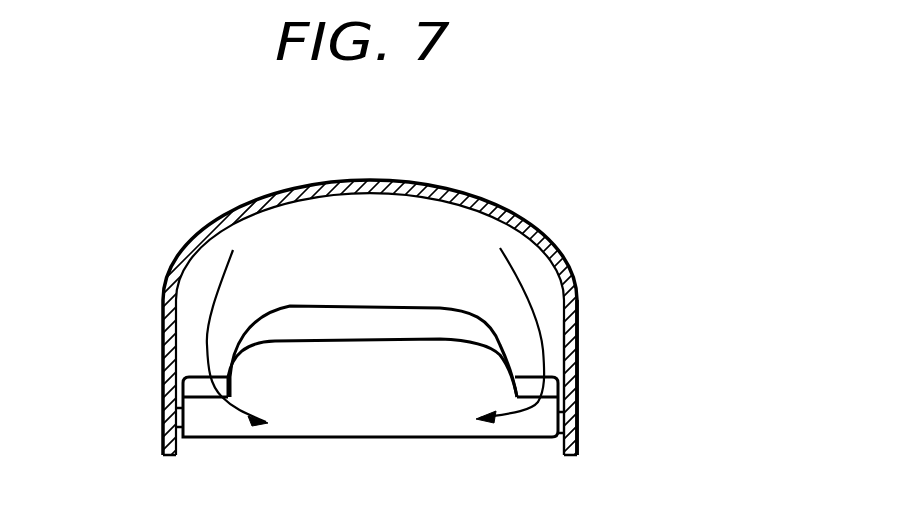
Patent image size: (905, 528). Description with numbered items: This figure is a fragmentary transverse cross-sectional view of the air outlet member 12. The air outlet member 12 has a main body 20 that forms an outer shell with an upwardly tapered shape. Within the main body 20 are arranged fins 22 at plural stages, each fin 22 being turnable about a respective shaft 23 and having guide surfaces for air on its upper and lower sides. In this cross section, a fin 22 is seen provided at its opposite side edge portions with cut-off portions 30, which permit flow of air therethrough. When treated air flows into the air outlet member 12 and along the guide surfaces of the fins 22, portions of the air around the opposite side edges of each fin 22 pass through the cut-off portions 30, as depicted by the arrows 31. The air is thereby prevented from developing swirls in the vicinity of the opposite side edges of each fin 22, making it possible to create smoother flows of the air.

The air outlet member 12 is at (209, 190).
The main body 20 is at (577, 298).
The cut-off portions 30 is at (572, 372).
The arrows 31 is at (516, 285).
The fins 22 is at (393, 413).
The shafts 23 is at (183, 413).